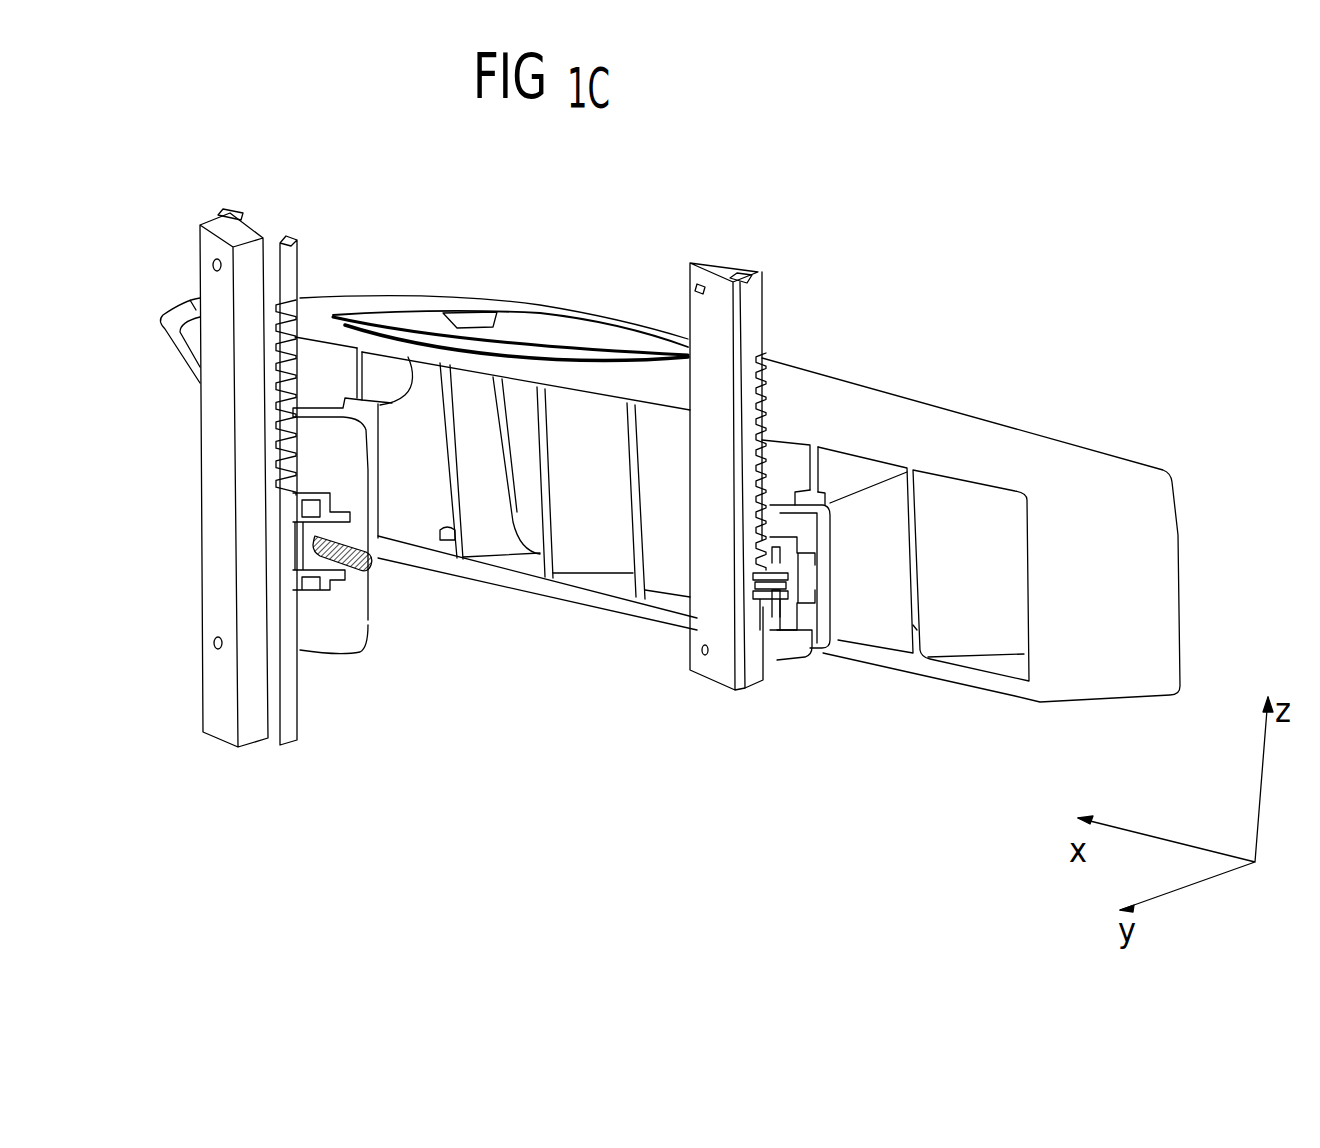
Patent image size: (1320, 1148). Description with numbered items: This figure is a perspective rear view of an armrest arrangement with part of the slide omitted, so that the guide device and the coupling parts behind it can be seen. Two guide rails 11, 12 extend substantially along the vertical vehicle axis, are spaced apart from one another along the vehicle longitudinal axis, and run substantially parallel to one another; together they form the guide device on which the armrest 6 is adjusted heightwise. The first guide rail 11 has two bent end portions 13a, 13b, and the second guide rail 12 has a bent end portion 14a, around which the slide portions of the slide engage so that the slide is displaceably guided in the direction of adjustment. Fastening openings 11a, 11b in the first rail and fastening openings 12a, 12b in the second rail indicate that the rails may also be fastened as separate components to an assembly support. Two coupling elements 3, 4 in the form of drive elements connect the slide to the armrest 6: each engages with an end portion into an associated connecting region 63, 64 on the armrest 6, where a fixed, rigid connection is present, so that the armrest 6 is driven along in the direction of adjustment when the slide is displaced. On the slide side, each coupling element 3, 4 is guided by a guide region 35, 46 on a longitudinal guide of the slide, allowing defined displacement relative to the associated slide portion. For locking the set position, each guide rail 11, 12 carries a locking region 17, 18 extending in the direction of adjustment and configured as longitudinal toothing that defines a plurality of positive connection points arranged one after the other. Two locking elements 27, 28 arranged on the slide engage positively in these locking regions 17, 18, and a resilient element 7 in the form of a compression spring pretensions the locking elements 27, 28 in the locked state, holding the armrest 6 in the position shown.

The coupling element 3 is at (293, 412).
The coupling element 4 is at (822, 520).
The armrest 6 is at (1003, 438).
The resilient element 7 is at (368, 563).
The guide rail 11 is at (213, 496).
The fastening opening 11a is at (213, 263).
The fastening opening 11b is at (214, 645).
The guide rail 12 is at (703, 630).
The fastening opening 12a is at (705, 656).
The fastening opening 12b is at (697, 285).
The bent end portion 13a is at (288, 238).
The bent end portion 13b is at (236, 210).
The guide rail 14a is at (759, 272).
The locking region 17 is at (284, 323).
The locking region 18 is at (753, 390).
The locking element 27 is at (293, 571).
The locking element 28 is at (770, 617).
The guide region 35 is at (355, 642).
The guide region 46 is at (802, 648).
The connecting region 63 is at (390, 403).
The connecting region 64 is at (843, 492).